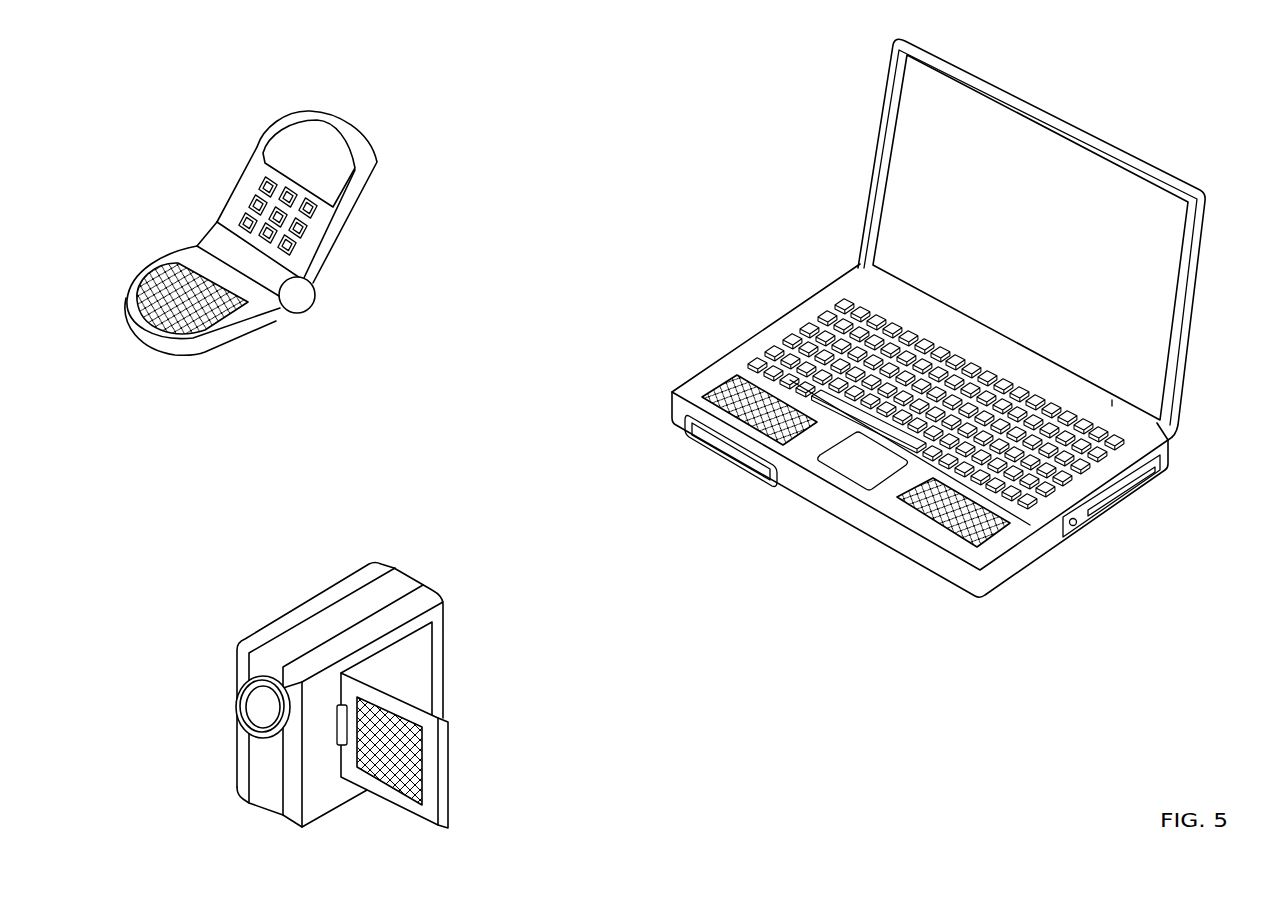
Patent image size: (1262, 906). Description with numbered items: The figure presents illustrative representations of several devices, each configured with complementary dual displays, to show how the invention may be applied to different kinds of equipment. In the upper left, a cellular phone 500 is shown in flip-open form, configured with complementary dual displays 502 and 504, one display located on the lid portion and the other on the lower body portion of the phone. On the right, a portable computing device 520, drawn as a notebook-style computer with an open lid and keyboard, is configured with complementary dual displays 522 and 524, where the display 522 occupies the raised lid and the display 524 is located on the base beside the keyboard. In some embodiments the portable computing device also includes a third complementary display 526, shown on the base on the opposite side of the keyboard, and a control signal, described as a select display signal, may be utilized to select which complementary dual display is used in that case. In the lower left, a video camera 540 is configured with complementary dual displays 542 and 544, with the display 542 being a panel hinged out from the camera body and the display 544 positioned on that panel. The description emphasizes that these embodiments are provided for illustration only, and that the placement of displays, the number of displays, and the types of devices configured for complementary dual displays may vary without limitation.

The cellular phone 500 is at (416, 97).
The complementary dual display 502 is at (355, 172).
The complementary dual display 504 is at (220, 323).
The portable computing device 520 is at (1143, 93).
The complementary dual display 522 is at (887, 130).
The complementary dual display 524 is at (803, 442).
The third complementary display 526 is at (997, 543).
The video camera 540 is at (461, 552).
The complementary dual display 542 is at (456, 705).
The complementary dual display 544 is at (422, 753).